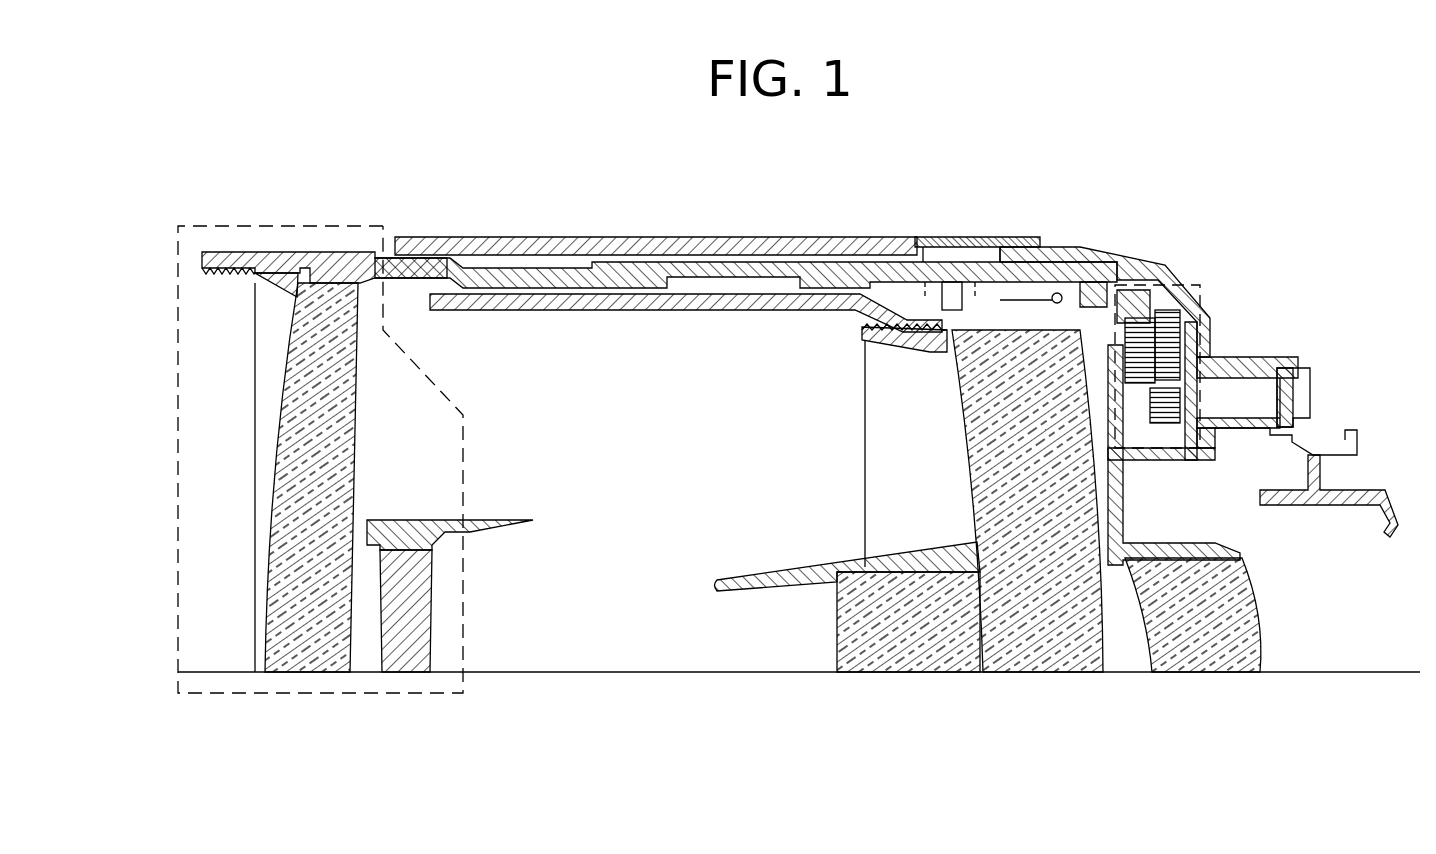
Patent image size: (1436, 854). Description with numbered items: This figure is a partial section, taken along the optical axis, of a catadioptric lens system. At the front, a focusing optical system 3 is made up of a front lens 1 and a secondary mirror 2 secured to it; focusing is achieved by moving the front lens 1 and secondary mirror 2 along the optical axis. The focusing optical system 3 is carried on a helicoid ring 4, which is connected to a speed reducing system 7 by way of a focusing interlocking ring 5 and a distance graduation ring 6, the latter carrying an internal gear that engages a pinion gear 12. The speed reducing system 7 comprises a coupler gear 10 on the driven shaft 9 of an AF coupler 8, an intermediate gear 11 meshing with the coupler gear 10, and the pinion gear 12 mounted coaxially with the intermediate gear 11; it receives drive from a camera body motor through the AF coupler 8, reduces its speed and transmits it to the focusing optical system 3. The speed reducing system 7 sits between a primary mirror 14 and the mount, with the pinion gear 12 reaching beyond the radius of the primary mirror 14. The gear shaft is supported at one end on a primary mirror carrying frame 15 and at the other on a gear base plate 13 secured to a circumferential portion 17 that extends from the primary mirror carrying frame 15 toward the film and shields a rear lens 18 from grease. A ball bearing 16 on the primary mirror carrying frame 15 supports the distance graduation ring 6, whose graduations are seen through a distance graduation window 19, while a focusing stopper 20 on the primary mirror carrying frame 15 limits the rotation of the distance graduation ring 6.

The front lens 1 is at (300, 420).
The secondary mirror 2 is at (380, 652).
The focusing optical system 3 is at (303, 226).
The helicoid ring 4 is at (562, 283).
The focusing interlocking ring 5 is at (760, 260).
The distance graduation ring 6 is at (1126, 300).
The speed reducing system 7 is at (1190, 285).
The AF coupler 8 is at (1305, 398).
The driven shaft 9 is at (1245, 390).
The coupler gear 10 is at (1168, 418).
The intermediate gear 11 is at (1213, 330).
The pinion gear 12 is at (1147, 318).
The gear base plate 13 is at (1205, 446).
The primary mirror 14 is at (1108, 650).
The primary mirror carrying frame 15 is at (1033, 332).
The ball bearing 16 is at (1060, 292).
The circumferential portion 17 is at (1148, 452).
The rear lens 18 is at (1257, 600).
The distance graduation window 19 is at (1015, 237).
The focusing stopper 20 is at (952, 290).